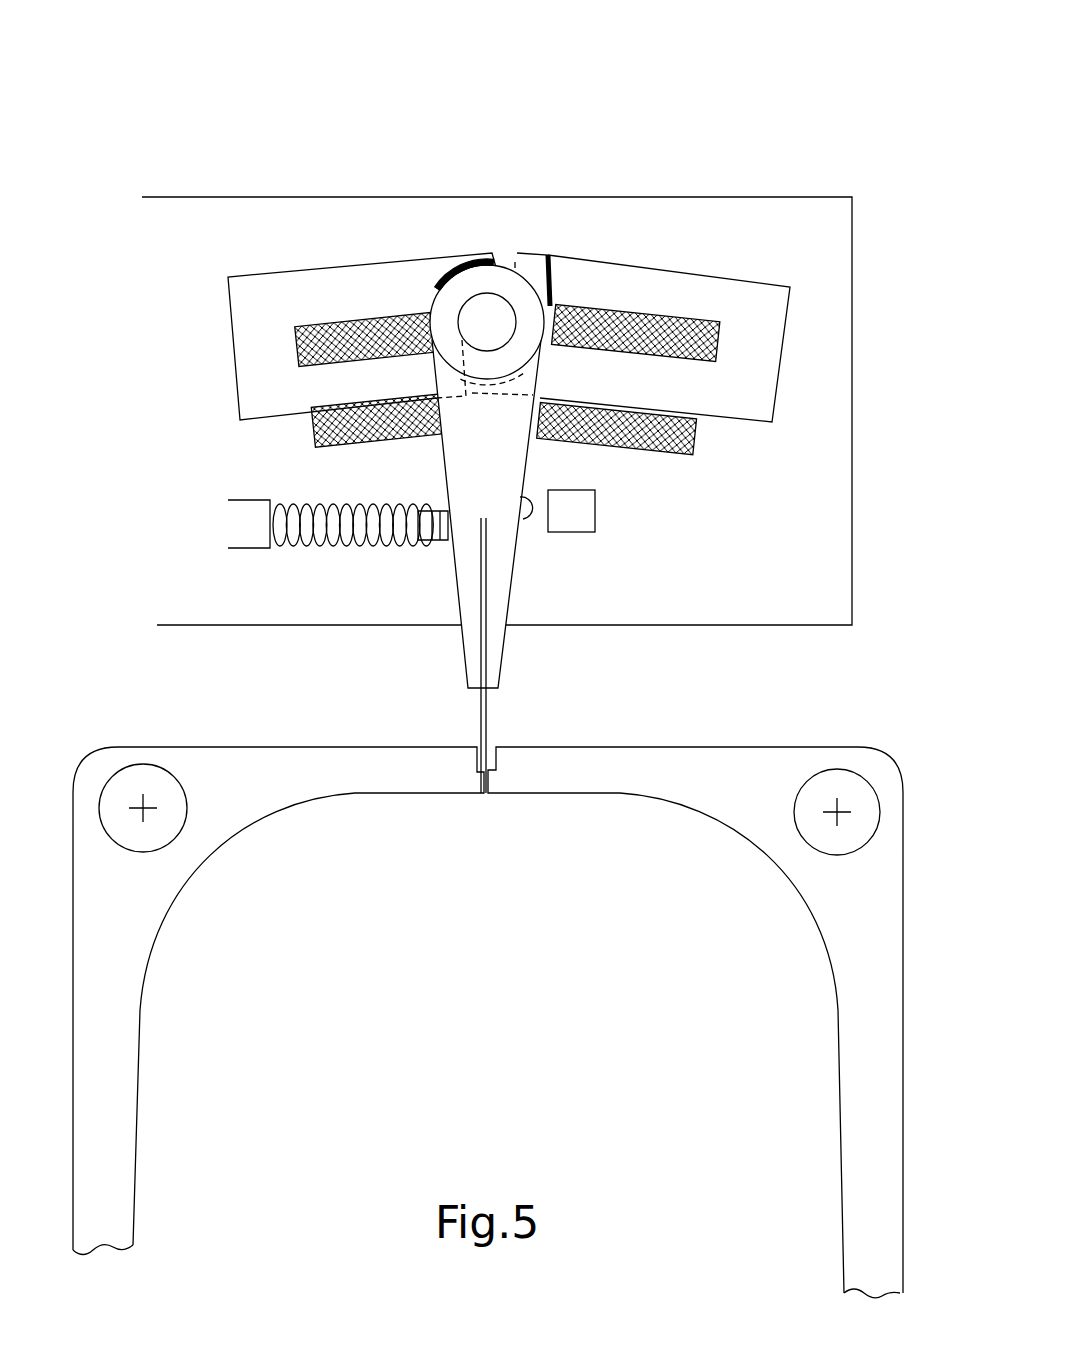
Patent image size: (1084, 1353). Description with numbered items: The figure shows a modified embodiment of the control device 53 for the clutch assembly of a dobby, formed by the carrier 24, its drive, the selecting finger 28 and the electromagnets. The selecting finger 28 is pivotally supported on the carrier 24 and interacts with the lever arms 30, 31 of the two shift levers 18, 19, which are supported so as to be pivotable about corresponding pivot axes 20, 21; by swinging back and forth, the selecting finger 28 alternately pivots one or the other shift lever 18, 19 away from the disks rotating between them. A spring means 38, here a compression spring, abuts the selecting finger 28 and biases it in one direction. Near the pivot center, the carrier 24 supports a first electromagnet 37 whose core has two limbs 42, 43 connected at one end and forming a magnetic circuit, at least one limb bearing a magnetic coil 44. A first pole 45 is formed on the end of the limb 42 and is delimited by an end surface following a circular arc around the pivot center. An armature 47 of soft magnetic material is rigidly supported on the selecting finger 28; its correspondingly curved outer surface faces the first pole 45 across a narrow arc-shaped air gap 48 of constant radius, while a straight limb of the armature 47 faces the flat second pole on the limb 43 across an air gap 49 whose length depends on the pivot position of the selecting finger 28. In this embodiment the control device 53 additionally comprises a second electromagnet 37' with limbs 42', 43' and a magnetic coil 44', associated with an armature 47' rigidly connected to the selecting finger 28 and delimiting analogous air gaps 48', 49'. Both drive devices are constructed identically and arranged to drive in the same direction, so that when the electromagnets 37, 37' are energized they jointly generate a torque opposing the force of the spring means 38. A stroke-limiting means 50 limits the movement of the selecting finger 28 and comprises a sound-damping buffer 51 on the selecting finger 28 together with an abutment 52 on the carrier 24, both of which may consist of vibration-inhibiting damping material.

The shift lever 18 is at (120, 1122).
The shift lever 19 is at (860, 1090).
The pivot axis 20 is at (143, 808).
The pivot axis 21 is at (837, 812).
The carrier 24 is at (638, 212).
The selecting finger 28 is at (503, 565).
The lever arm 30 is at (388, 775).
The lever arm 31 is at (597, 775).
The electromagnet 37 is at (362, 253).
The second electromagnet 37' is at (676, 274).
The spring means 38 is at (345, 577).
The limb 42 is at (395, 282).
The limb 42' is at (690, 298).
The limb 43 is at (370, 385).
The limb 43' is at (683, 385).
The magnetic coil 44 is at (373, 395).
The magnetic coil 44' is at (667, 392).
The first pole 45 is at (418, 258).
The armature 47 is at (483, 589).
The armature 47' is at (562, 224).
The air gap 48 is at (480, 218).
The air gap 48' is at (551, 379).
The air gap 49 is at (395, 376).
The air gap 49' is at (620, 251).
The stroke-limiting means 50 is at (612, 513).
The sound-damping buffer 51 is at (528, 500).
The abutment 52 is at (586, 526).
The control device 53 is at (757, 93).